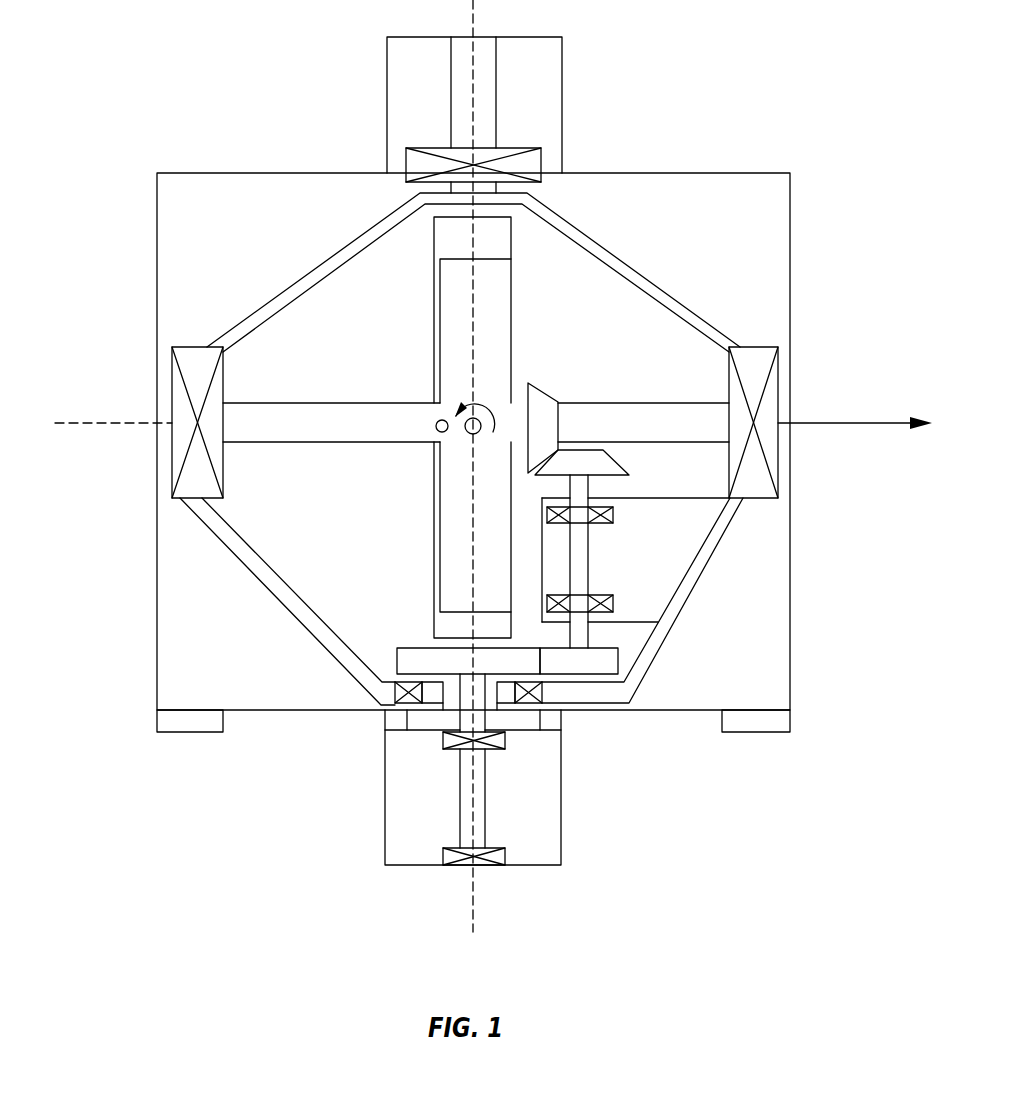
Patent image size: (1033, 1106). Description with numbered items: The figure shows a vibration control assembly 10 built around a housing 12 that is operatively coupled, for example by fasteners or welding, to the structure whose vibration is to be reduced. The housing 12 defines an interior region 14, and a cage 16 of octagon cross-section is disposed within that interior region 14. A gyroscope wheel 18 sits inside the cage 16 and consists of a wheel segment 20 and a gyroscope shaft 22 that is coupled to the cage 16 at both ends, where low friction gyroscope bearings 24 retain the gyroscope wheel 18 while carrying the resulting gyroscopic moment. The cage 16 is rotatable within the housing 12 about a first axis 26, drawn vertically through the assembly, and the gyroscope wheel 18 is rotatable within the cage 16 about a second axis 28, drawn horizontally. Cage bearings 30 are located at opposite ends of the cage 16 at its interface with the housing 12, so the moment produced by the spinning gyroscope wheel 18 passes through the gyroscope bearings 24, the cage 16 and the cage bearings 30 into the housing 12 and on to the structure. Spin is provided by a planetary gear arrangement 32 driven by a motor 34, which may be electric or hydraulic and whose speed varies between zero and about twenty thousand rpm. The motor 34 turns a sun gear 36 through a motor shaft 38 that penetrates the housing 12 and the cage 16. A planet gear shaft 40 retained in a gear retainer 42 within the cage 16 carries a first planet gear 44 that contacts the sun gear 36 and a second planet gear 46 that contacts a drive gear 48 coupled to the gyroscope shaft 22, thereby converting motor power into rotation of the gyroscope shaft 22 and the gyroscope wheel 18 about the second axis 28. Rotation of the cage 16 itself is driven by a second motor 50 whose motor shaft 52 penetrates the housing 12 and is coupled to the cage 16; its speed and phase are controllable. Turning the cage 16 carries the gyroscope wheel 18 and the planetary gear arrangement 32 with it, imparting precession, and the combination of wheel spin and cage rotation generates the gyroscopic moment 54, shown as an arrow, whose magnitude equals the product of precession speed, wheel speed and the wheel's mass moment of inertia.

The vibration control assembly 10 is at (183, 114).
The housing 12 is at (157, 266).
The interior region 14 is at (196, 207).
The cage 16 is at (630, 272).
The gyroscope wheel 18 is at (476, 427).
The wheel segment 20 is at (435, 580).
The gyroscope shaft 22 is at (293, 410).
The gyroscope bearings 24 is at (176, 446).
The first axis 26 is at (472, 900).
The second axis 28 is at (108, 417).
The cage bearings 30 is at (512, 148).
The planetary gear arrangement 32 is at (552, 670).
The motor 34 is at (543, 795).
The sun gear 36 is at (417, 658).
The motor shaft 38 is at (478, 718).
The planet gear shaft 40 is at (580, 562).
The gear retainer 42 is at (683, 537).
The first planet gear 44 is at (598, 660).
The second planet gear 46 is at (608, 465).
The drive gear 48 is at (540, 397).
The motor 50 is at (403, 93).
The motor shaft 52 is at (497, 63).
The gyroscopic moment 54 is at (850, 427).